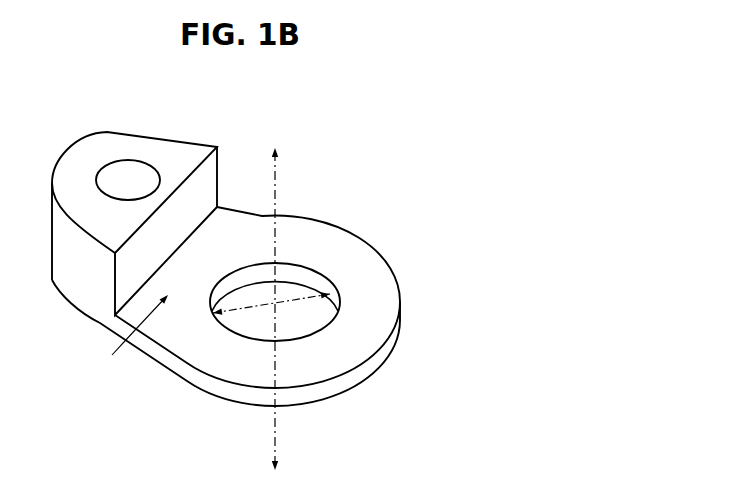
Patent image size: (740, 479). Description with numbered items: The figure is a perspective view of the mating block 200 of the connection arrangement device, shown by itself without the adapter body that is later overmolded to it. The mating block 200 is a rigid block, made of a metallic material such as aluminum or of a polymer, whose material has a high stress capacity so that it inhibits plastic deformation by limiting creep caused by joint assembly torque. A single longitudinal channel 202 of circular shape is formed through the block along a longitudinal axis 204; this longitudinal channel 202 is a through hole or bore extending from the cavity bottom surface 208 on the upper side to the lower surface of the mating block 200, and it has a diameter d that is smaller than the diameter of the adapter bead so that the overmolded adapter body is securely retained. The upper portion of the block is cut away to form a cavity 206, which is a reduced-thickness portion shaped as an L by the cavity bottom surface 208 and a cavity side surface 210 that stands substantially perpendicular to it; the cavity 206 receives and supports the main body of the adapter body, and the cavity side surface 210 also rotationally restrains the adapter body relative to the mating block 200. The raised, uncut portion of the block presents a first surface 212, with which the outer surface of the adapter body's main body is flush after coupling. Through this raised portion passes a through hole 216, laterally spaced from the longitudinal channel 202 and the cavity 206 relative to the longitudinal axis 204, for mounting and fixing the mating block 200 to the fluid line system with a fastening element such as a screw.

The mating block 200 is at (395, 185).
The longitudinal channel 202 is at (305, 297).
The longitudinal axis 204 is at (277, 202).
The cavity 206 is at (121, 338).
The cavity bottom surface 208 is at (363, 263).
The cavity side surface 210 is at (210, 182).
The first surface 212 is at (171, 156).
The through hole 216 is at (125, 177).
The diameter of the longitudinal channel d is at (290, 328).